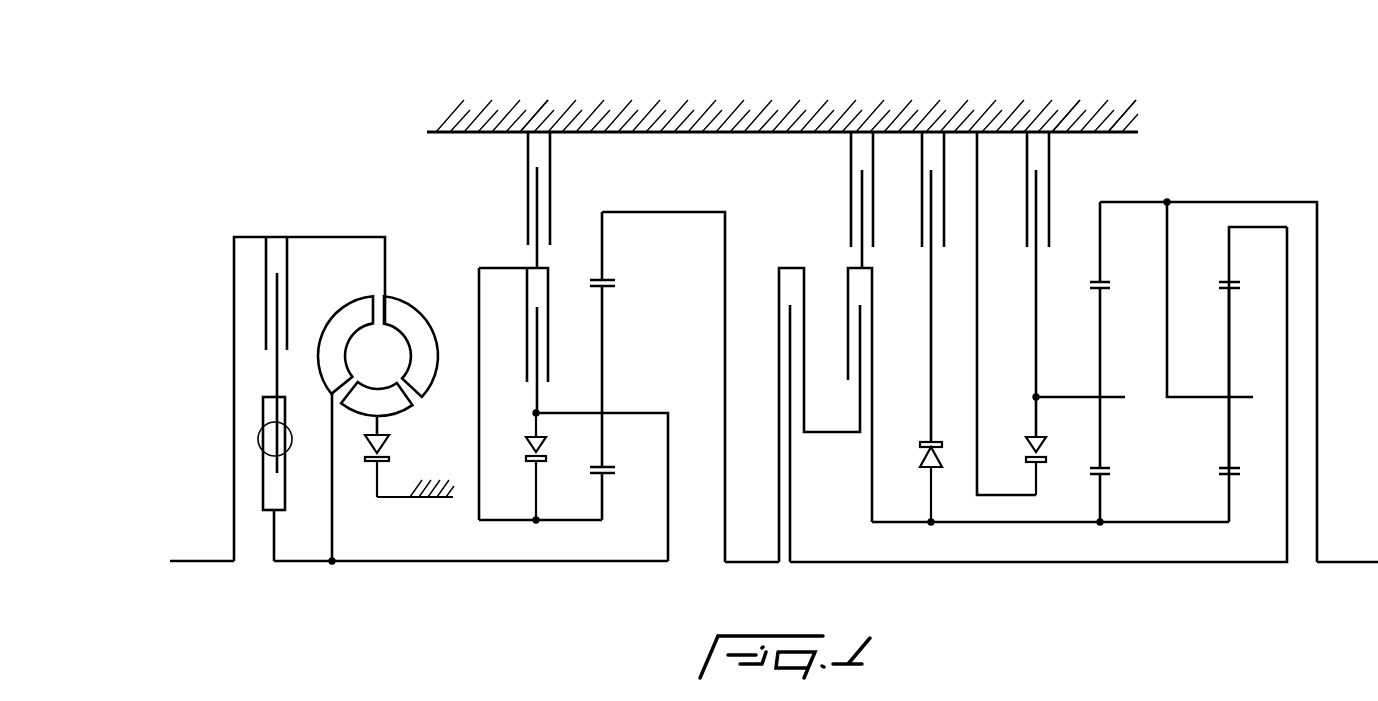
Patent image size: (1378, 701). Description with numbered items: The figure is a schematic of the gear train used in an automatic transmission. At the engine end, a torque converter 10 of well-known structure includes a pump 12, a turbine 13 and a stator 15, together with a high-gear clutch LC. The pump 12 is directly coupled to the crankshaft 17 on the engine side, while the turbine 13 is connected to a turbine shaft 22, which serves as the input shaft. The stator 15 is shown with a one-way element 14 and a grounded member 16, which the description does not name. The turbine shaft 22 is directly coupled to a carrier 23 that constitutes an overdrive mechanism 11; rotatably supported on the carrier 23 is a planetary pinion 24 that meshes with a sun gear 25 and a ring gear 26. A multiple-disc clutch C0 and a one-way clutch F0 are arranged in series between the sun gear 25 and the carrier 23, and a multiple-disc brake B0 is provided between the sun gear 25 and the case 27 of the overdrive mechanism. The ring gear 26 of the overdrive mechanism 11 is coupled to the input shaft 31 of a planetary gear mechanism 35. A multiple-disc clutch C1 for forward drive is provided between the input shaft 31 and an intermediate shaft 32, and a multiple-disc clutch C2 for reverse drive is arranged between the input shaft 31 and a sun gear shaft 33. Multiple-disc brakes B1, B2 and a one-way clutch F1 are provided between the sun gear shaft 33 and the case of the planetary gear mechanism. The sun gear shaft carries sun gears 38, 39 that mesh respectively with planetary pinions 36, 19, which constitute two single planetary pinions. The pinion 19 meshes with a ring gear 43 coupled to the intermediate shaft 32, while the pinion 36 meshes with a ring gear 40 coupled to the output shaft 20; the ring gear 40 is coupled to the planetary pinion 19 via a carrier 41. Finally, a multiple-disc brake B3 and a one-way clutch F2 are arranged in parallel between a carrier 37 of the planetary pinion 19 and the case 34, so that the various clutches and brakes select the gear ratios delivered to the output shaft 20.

The torque converter 10 is at (299, 231).
The overdrive mechanism 11 is at (663, 104).
The pump 12 is at (400, 312).
The turbine 13 is at (331, 368).
The one-way clutch 14 is at (373, 460).
The stator 15 is at (393, 403).
The stationary member 16 is at (415, 498).
The crankshaft 17 is at (195, 558).
The planetary pinion 19 is at (1225, 445).
The output shaft 20 is at (1328, 562).
The turbine shaft 22 is at (462, 560).
The carrier 23 is at (631, 416).
The planetary pinion 24 is at (602, 345).
The sun gear 25 is at (566, 518).
The ring gear 26 is at (663, 212).
The case 27 is at (535, 118).
The input shaft 31 is at (743, 558).
The intermediate shaft 32 is at (1018, 558).
The sun gear shaft 33 is at (1134, 521).
The case 34 is at (1117, 113).
The planetary gear mechanism 35 is at (1064, 105).
The planetary pinion 36 is at (1102, 368).
The carrier 37 is at (1057, 397).
The sun gear 38 is at (1097, 488).
The sun gear 39 is at (1228, 510).
The ring gear 40 is at (1103, 250).
The carrier 41 is at (1187, 397).
The ring gear 43 is at (1248, 227).
The multiple-disc brake B0 is at (552, 200).
The multiple-disc brake B1 is at (845, 200).
The multiple-disc brake B2 is at (917, 287).
The multiple-disc brake B3 is at (1052, 284).
The multiple-disc clutch C0 is at (528, 394).
The multiple-disc clutch for forward drive C1 is at (806, 415).
The multiple-disc clutch for reverse drive C2 is at (875, 395).
The one-way clutch F0 is at (522, 466).
The one-way clutch F1 is at (919, 483).
The one-way clutch F2 is at (1011, 313).